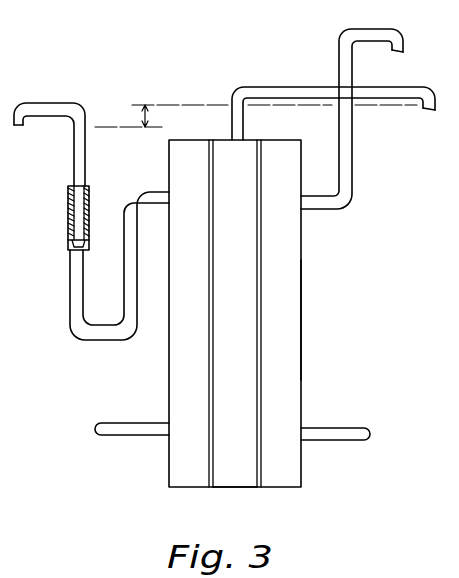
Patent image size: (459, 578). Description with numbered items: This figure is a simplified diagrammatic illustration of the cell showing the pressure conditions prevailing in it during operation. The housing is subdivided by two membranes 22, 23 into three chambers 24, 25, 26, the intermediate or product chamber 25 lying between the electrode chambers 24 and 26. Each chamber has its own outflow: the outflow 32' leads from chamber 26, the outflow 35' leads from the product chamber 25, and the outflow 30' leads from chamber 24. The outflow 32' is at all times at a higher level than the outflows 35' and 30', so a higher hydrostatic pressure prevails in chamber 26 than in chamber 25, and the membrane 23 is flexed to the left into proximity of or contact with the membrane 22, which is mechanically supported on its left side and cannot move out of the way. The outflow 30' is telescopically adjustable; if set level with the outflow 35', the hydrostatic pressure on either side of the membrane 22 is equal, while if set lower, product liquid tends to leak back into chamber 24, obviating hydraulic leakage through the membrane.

The outflow 30' is at (91, 206).
The outflow 32' is at (359, 106).
The outflow 35' is at (333, 120).
The chamber 24 is at (182, 367).
The membrane 22 is at (209, 407).
The membrane 23 is at (257, 405).
The intermediate or product chamber 25 is at (242, 472).
The chamber 26 is at (282, 318).